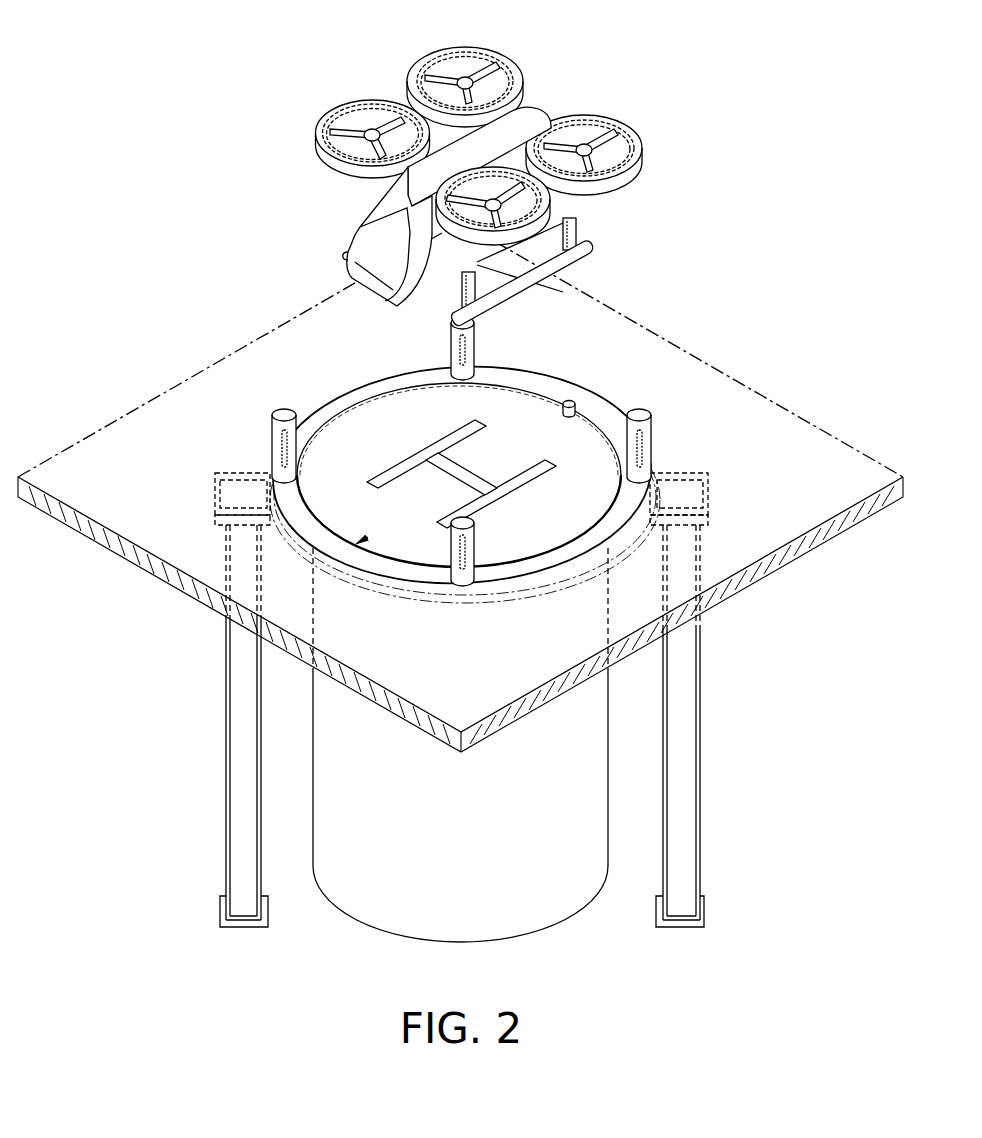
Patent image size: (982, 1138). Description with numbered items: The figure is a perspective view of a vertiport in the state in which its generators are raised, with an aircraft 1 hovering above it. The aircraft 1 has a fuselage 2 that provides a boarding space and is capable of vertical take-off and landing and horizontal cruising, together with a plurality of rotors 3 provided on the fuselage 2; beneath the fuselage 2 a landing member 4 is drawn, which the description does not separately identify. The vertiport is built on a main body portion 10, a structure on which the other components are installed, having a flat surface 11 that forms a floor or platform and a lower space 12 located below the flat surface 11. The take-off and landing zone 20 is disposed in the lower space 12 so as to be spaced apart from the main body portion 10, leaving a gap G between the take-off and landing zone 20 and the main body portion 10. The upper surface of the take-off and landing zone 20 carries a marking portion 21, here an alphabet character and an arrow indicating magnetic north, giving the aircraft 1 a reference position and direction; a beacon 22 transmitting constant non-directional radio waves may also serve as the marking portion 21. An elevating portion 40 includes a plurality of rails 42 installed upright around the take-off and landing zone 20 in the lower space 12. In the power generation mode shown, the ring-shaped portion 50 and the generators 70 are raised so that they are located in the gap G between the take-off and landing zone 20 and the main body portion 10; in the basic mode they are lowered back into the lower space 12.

The aircraft 1 is at (470, 175).
The fuselage 2 is at (370, 225).
The rotors 3 is at (333, 108).
The landing skid 4 is at (580, 238).
The main body portion 10 is at (95, 456).
The flat surface 11 is at (807, 480).
The lower space 12 is at (803, 652).
The take-off and landing zone 20 is at (330, 457).
The marking portion 21 is at (405, 463).
The beacon 22 is at (572, 402).
The elevating portion 40 is at (692, 466).
The rails 42 is at (700, 818).
The ring-shaped portion 50 is at (318, 541).
The generators 70 is at (641, 414).
The gap G is at (605, 396).